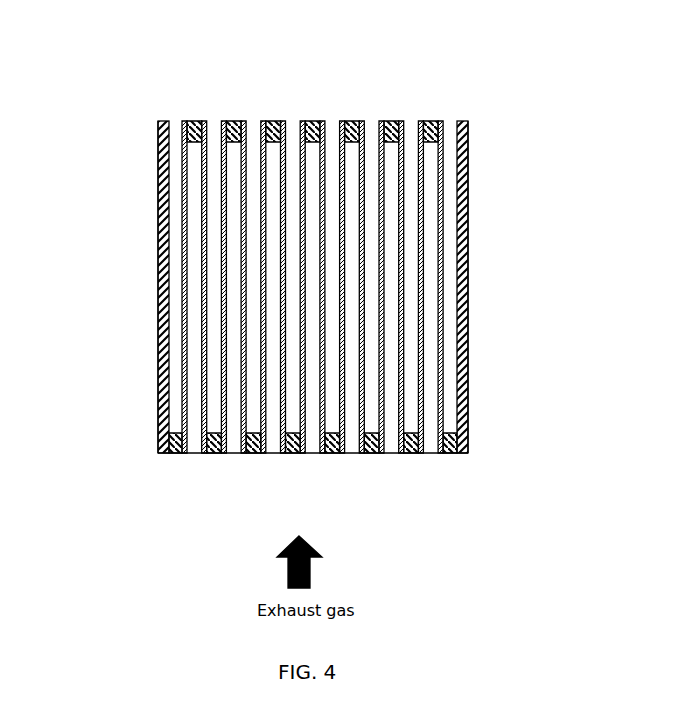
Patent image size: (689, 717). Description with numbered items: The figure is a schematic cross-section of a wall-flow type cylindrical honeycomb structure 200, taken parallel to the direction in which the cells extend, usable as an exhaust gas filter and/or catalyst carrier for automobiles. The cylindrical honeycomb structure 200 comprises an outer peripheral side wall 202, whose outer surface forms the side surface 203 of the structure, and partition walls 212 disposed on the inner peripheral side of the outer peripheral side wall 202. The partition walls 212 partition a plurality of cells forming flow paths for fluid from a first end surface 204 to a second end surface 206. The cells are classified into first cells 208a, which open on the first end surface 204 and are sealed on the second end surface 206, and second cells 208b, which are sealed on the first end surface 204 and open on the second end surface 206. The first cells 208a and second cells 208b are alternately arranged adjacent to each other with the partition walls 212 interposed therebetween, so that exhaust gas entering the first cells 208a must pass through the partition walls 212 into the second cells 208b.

The cylindrical honeycomb structure 200 is at (308, 282).
The outer peripheral side wall 202 is at (308, 290).
The side surface 203 is at (157, 162).
The first end surface 204 is at (419, 459).
The second end surface 206 is at (303, 283).
The first cells 208a is at (230, 453).
The second cells 208b is at (183, 119).
The partition walls 212 is at (183, 248).